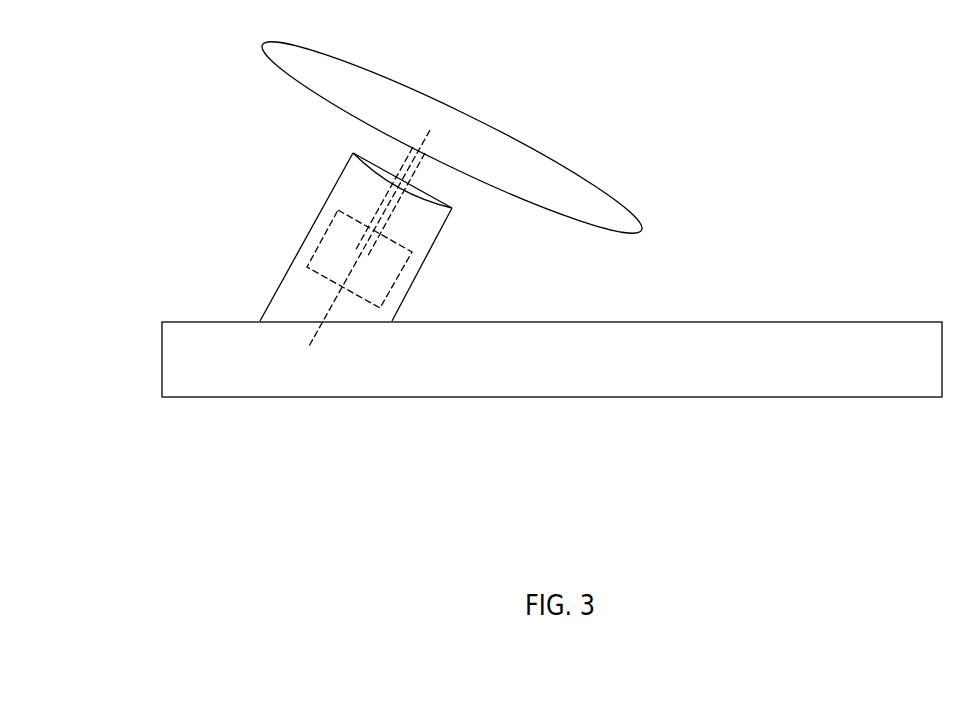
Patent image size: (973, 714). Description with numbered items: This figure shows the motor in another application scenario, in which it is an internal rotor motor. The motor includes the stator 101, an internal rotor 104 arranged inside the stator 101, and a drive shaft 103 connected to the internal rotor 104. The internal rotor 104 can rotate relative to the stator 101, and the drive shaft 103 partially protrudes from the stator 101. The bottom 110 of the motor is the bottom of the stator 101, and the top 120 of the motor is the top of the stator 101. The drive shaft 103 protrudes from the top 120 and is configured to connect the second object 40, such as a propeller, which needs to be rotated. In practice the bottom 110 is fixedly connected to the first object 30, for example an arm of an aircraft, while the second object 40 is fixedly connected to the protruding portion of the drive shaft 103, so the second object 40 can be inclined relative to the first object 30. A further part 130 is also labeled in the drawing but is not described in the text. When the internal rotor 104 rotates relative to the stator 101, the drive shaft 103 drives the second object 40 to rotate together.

The first object 30 is at (778, 347).
The second object 40 is at (500, 157).
The stator 101 is at (320, 224).
The drive shaft 103 is at (470, 173).
The internal rotor 104 is at (308, 268).
The bottom 110 is at (280, 320).
The top 120 is at (420, 193).
The side wall 130 is at (437, 208).